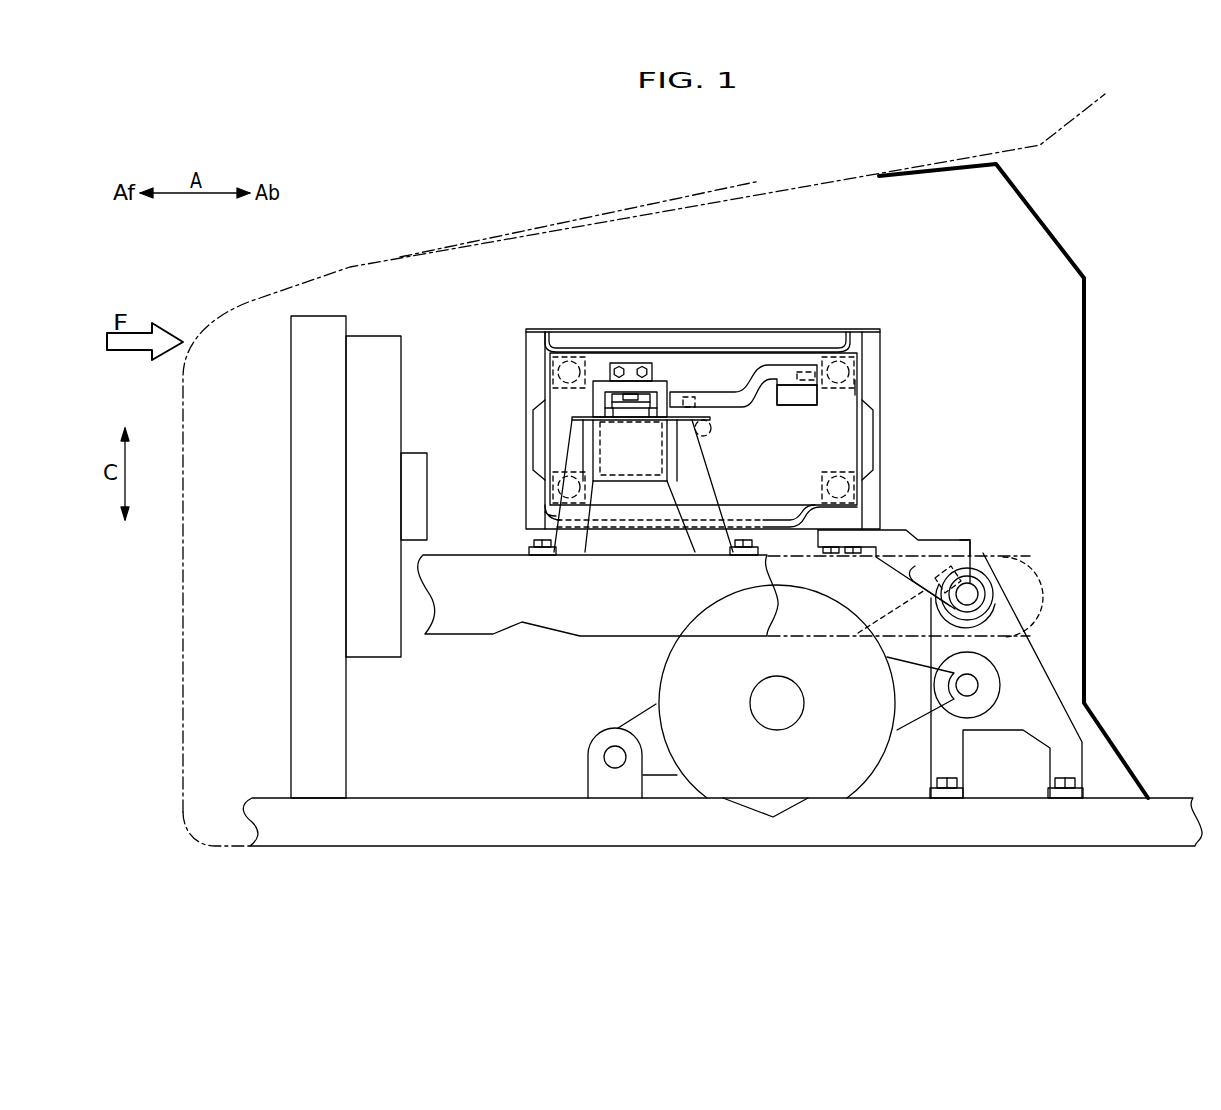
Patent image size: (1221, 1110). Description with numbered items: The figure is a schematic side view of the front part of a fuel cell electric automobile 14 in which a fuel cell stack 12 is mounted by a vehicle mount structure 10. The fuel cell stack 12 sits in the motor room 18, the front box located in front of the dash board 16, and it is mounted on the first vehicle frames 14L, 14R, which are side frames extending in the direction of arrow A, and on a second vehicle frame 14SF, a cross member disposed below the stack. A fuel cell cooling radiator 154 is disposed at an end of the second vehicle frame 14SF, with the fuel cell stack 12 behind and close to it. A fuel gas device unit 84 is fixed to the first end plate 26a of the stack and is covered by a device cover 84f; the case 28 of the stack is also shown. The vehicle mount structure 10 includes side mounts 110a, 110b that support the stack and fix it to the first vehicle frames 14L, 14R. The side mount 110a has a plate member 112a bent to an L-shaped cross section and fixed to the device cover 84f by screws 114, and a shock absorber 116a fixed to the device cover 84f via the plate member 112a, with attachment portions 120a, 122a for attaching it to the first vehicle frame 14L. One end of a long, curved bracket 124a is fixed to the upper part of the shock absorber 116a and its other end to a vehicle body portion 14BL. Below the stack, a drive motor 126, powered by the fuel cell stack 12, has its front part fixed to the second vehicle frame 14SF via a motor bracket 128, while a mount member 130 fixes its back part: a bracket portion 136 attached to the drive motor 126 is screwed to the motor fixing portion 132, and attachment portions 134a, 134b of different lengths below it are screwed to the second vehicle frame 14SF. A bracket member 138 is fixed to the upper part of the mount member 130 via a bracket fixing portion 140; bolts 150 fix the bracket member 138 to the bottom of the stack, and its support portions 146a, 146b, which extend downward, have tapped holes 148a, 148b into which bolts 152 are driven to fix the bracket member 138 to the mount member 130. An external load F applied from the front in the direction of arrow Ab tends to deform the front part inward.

The vehicle mount structure 10 is at (378, 149).
The fuel cell electric automobile 14 is at (757, 181).
The motor room 18 is at (581, 215).
The dash board 16 is at (1083, 397).
The fuel cell stack 12 is at (708, 395).
The case 28 is at (557, 329).
The fuel cell cooling radiator 154 is at (300, 400).
The second vehicle frame 14SF is at (390, 807).
The first vehicle frame 14L is at (598, 626).
The first vehicle frame 14R is at (467, 628).
The fuel gas device unit 84 is at (708, 440).
The device cover 84f is at (840, 415).
The first end plate 26a is at (838, 400).
The screws 114 is at (619, 362).
The plate member 112a is at (634, 362).
The side mount 110a is at (676, 382).
The side mount 110b is at (662, 368).
The shock absorber 116a is at (665, 460).
The attachment portion 122a is at (577, 538).
The attachment portion 120a is at (708, 537).
The bracket 124a is at (733, 408).
The vehicle body portion 14BL is at (800, 402).
The support portion 146a is at (897, 559).
The support portion 146b is at (897, 559).
The bolts 150 is at (855, 553).
The bracket member 138 is at (972, 539).
The bracket fixing portion 140 is at (1002, 596).
The bolts 152 is at (985, 608).
The mount member 130 is at (1041, 696).
The attachment portion 134a is at (958, 765).
The attachment portion 134b is at (1075, 765).
The motor fixing portion 132 is at (993, 678).
The bracket portion 136 is at (865, 696).
The tapped hole 148a is at (865, 696).
The tapped hole 148b is at (905, 700).
The drive motor 126 is at (667, 680).
The motor bracket 128 is at (657, 755).